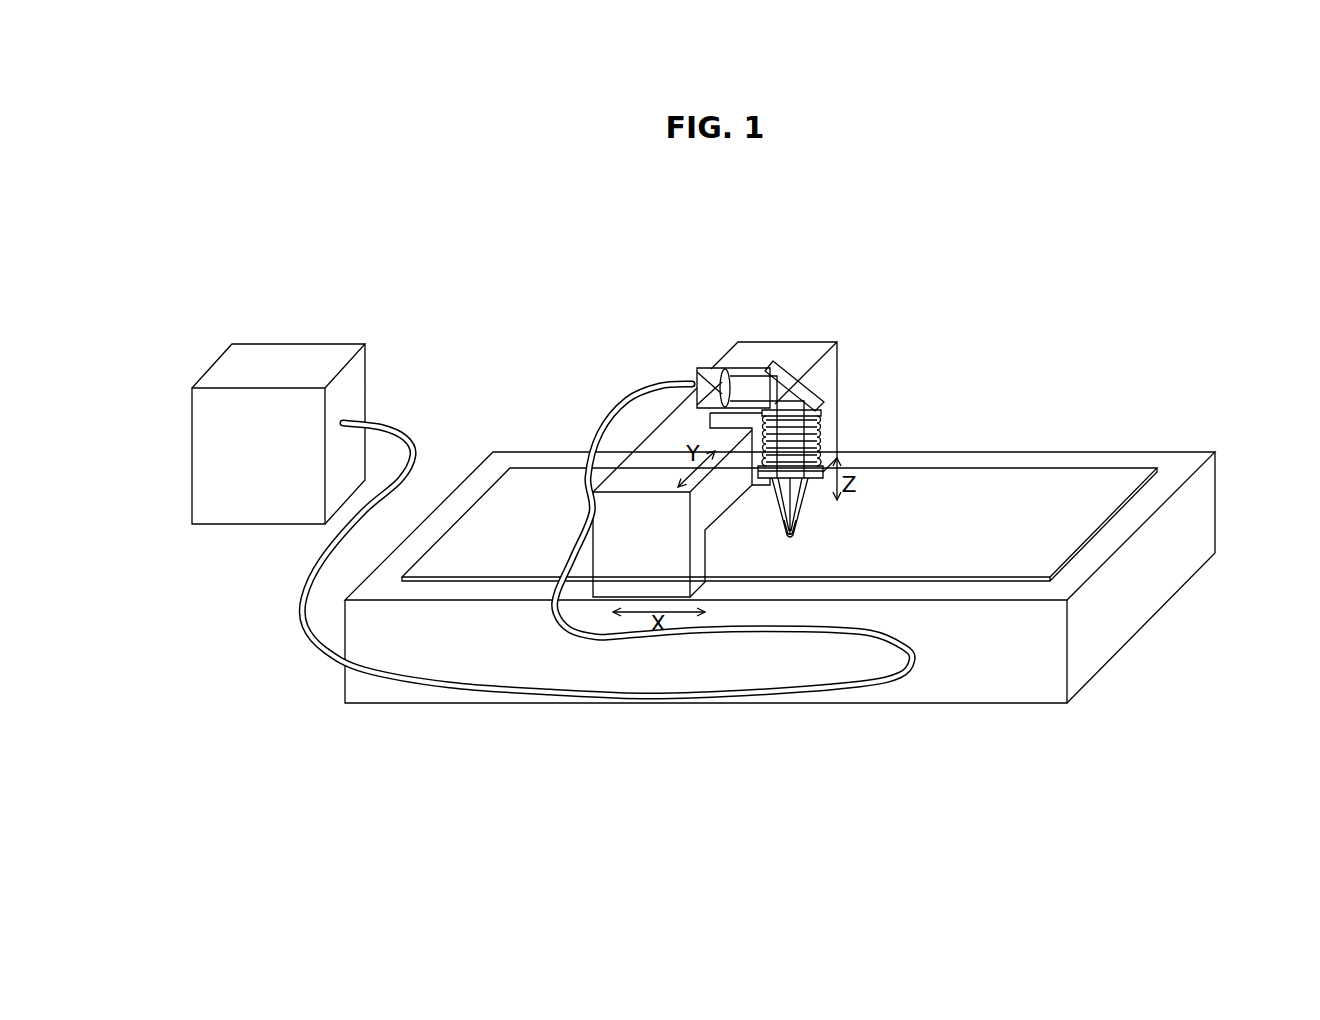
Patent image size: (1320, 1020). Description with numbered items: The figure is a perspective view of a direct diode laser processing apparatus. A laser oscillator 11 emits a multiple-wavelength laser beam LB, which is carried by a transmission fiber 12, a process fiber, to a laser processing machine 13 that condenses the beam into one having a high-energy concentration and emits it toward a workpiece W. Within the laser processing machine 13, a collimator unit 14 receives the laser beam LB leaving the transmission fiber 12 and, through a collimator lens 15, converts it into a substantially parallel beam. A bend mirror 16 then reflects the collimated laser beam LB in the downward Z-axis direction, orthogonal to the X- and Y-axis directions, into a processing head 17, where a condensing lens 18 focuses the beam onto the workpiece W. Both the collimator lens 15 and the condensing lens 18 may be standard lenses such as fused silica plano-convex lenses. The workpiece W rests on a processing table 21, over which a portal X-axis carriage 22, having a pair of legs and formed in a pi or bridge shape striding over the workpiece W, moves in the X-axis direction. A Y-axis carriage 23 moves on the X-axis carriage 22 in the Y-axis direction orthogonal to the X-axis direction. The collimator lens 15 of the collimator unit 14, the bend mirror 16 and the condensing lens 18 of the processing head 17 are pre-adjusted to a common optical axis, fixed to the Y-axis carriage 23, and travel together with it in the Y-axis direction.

The laser oscillator 11 is at (286, 352).
The transmission fiber 12 is at (542, 703).
The laser processing machine 13 is at (842, 387).
The collimator unit 14 is at (696, 384).
The collimator lens 15 is at (727, 373).
The bend mirror 16 is at (797, 370).
The processing head 17 is at (807, 520).
The condensing lens 18 is at (783, 528).
The processing table 21 is at (1067, 460).
The X-axis carriage 22 is at (840, 363).
The Y-axis carriage 23 is at (752, 463).
The workpiece W is at (955, 480).
The laser beam LB is at (755, 373).